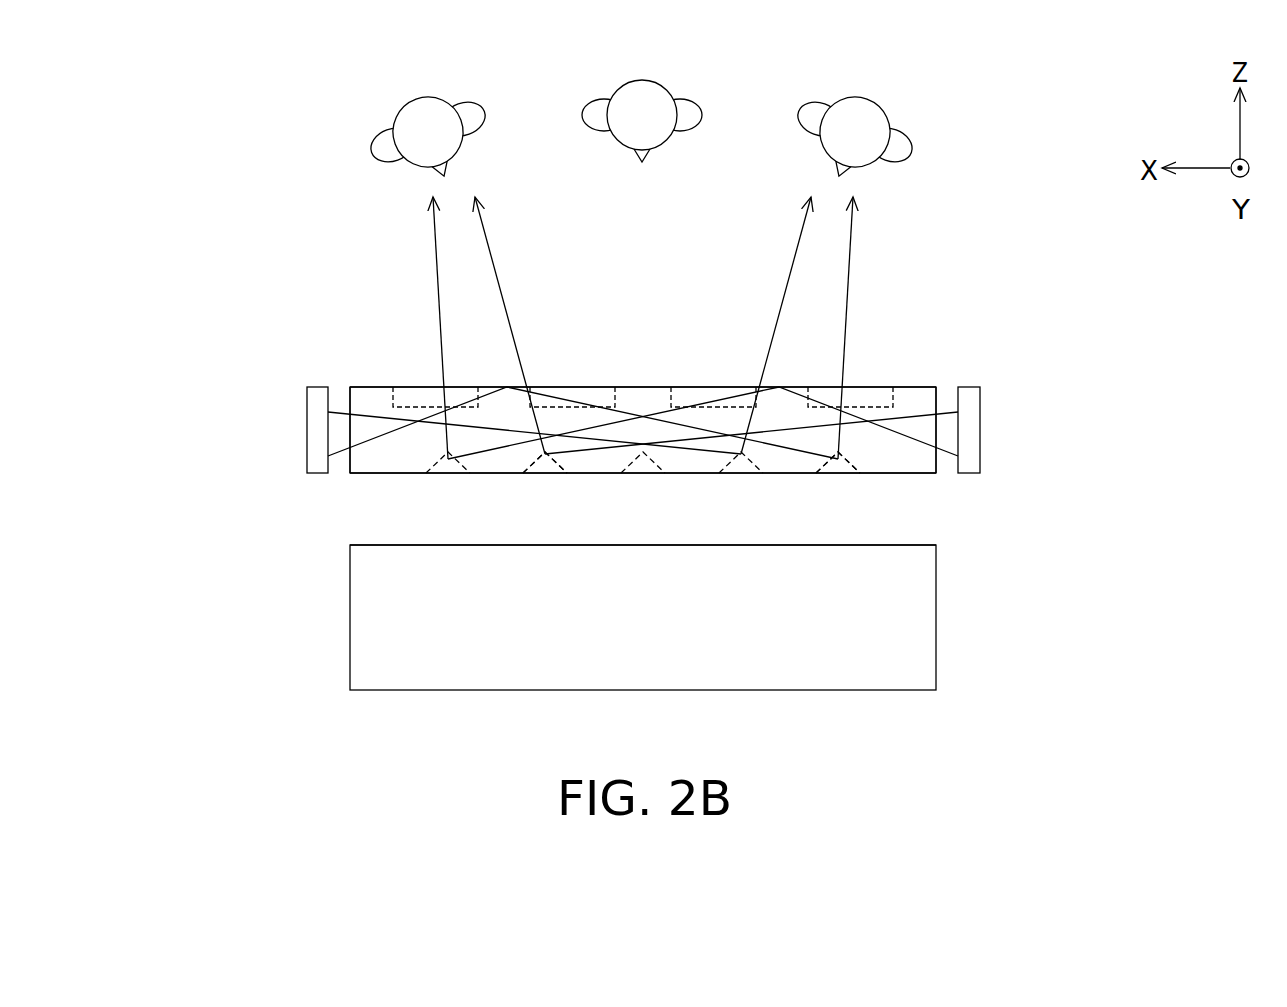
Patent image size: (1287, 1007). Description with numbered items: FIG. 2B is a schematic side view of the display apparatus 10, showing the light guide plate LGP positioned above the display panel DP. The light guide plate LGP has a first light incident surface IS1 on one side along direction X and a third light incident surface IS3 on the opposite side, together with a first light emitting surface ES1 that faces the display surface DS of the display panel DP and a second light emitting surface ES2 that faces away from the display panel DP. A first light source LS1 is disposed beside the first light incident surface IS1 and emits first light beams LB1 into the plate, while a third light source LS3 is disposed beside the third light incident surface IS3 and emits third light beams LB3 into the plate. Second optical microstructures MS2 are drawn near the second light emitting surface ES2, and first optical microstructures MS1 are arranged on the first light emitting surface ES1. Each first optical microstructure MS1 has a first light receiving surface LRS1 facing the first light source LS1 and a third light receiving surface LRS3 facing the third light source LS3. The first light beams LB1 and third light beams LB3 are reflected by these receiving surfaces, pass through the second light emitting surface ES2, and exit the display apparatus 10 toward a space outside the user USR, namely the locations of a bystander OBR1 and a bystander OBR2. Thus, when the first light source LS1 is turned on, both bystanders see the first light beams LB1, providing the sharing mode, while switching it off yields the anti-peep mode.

The bystander OBR2 is at (430, 121).
The user USR is at (642, 94).
The bystander OBR1 is at (853, 121).
The light guide plate LGP is at (925, 463).
The third light incident surface IS3 is at (349, 392).
The first light incident surface IS1 is at (938, 392).
The second light emitting surface ES2 is at (385, 385).
The first light emitting surface ES1 is at (396, 474).
The third light source LS3 is at (318, 425).
The first light source LS1 is at (967, 425).
The second optical microstructures MS2 is at (669, 407).
The first optical microstructures MS1 is at (756, 467).
The first light receiving surface LRS1 is at (560, 467).
The third light receiving surface LRS3 is at (830, 470).
The third light beams LB3 is at (503, 428).
The first light beams LB1 is at (927, 440).
The display panel DP is at (916, 628).
The display surface DS is at (525, 543).
The display apparatus 10 is at (1000, 726).